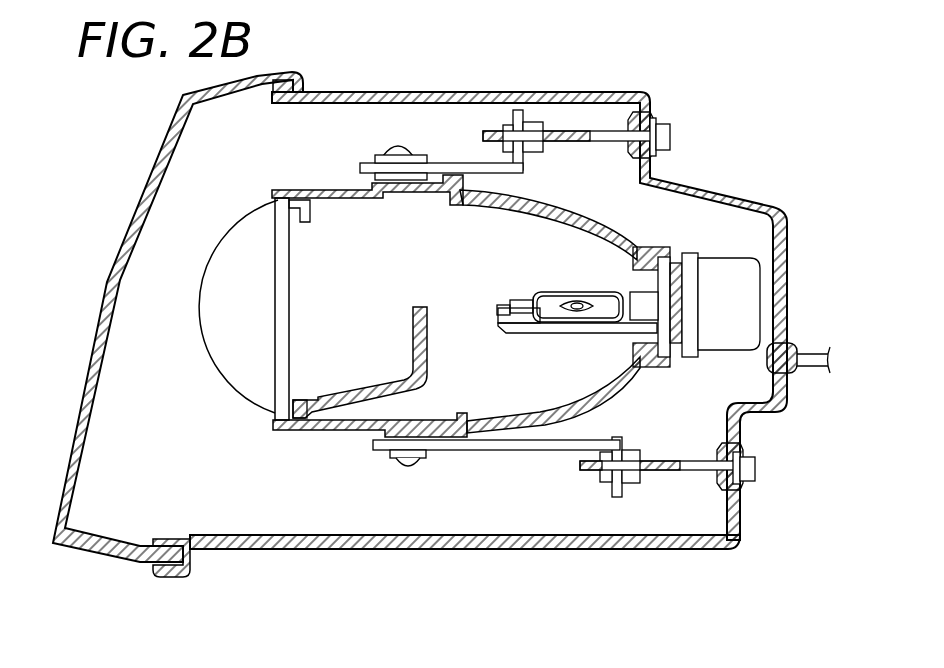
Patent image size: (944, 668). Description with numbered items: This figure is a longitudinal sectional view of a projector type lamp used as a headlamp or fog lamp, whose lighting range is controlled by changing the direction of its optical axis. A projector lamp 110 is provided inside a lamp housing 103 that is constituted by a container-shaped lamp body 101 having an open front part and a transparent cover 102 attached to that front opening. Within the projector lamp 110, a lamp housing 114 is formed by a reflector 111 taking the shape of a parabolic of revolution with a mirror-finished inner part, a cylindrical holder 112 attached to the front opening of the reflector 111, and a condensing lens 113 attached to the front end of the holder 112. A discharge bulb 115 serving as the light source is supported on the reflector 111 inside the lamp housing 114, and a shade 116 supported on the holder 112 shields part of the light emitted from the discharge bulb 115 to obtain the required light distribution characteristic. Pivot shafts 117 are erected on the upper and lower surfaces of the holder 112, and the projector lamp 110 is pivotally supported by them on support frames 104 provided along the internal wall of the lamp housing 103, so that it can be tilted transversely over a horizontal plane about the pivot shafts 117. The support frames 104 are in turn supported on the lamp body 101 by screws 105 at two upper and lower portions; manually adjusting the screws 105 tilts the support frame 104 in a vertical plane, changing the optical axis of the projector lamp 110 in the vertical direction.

The lamp body 101 is at (723, 193).
The transparent cover 102 is at (142, 172).
The lamp housing 103 is at (587, 527).
The support frame 104 is at (477, 163).
The screw 105 is at (672, 138).
The projector lamp 110 is at (297, 170).
The reflector 111 is at (573, 203).
The holder 112 is at (327, 430).
The condensing lens 113 is at (233, 383).
The lamp housing 114 is at (310, 252).
The discharge bulb 115 is at (577, 308).
The shade 116 is at (427, 362).
The pivot shaft 117 is at (407, 150).